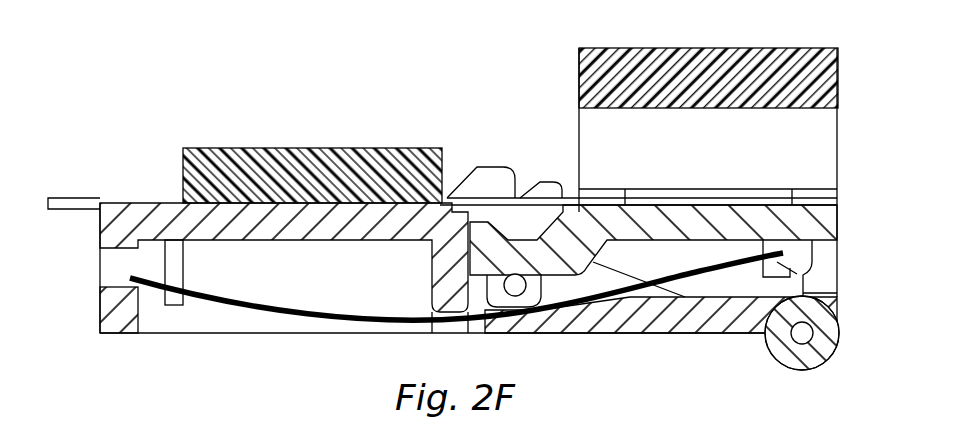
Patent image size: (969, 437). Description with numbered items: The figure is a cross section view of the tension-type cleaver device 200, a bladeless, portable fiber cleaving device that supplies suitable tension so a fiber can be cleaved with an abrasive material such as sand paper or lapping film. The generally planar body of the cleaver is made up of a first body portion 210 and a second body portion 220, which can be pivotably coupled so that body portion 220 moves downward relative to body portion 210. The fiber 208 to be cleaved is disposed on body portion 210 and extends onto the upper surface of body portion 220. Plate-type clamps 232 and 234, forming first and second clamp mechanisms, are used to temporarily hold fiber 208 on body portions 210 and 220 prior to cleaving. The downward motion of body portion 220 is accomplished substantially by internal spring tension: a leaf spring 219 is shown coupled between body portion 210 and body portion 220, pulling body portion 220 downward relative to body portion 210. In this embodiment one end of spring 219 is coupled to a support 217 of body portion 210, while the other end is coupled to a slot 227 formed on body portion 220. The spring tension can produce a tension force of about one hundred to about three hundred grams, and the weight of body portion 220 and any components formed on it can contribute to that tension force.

The tension-type cleaver device 200 is at (226, 106).
The fiber 208 is at (72, 203).
The first body portion 210 is at (173, 320).
The support 217 is at (117, 305).
The leaf spring 219 is at (287, 312).
The second body portion 220 is at (570, 222).
The slot 227 is at (776, 268).
The plate-type clamp 232 is at (303, 157).
The plate-type clamp 234 is at (590, 68).